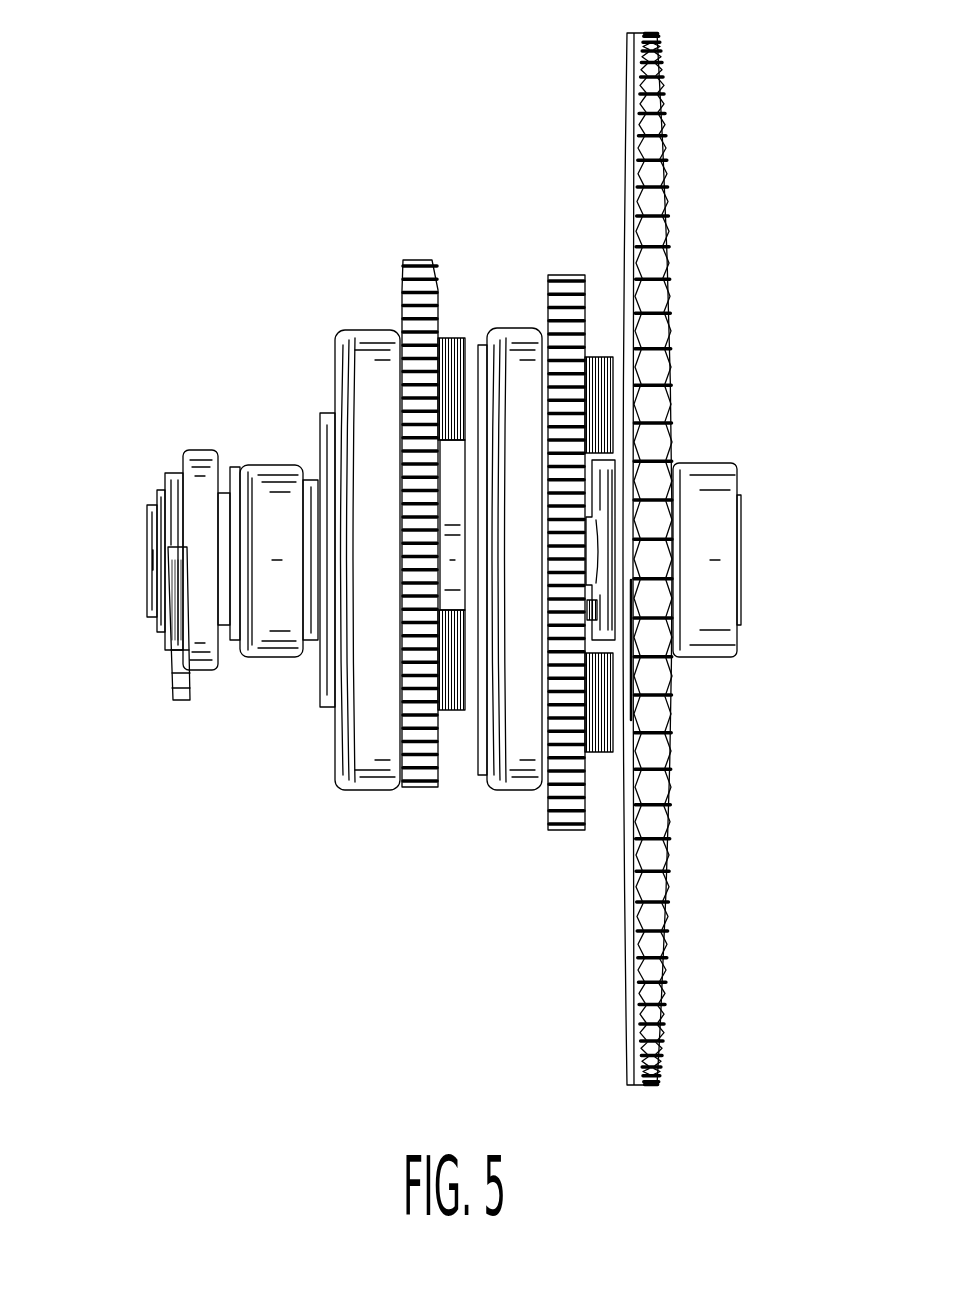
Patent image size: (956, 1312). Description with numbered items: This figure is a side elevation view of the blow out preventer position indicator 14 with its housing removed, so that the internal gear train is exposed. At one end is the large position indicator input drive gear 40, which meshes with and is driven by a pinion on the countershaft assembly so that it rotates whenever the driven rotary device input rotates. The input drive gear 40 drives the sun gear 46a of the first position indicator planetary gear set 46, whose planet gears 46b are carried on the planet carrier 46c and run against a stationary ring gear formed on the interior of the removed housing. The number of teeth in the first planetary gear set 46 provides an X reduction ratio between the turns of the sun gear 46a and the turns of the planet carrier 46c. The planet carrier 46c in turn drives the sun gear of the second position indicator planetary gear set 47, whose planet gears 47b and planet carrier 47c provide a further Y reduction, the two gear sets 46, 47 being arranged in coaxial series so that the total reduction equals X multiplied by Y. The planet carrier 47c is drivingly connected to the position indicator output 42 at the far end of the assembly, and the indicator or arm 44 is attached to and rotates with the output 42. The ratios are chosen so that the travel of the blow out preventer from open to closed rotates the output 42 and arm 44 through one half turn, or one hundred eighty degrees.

The position indicator 14 is at (740, 101).
The position indicator input drive gear 40 is at (646, 1085).
The position indicator output 42 is at (147, 556).
The indicator or arm 44 is at (188, 700).
The first position indicator planetary gear set 46 is at (546, 567).
The sun gear 46a is at (555, 565).
The planet gears 46b is at (567, 275).
The planet carrier 46c is at (517, 350).
The second position indicator planetary gear set 47 is at (392, 551).
The planet gears 47b is at (418, 260).
The planet carrier 47c is at (372, 350).